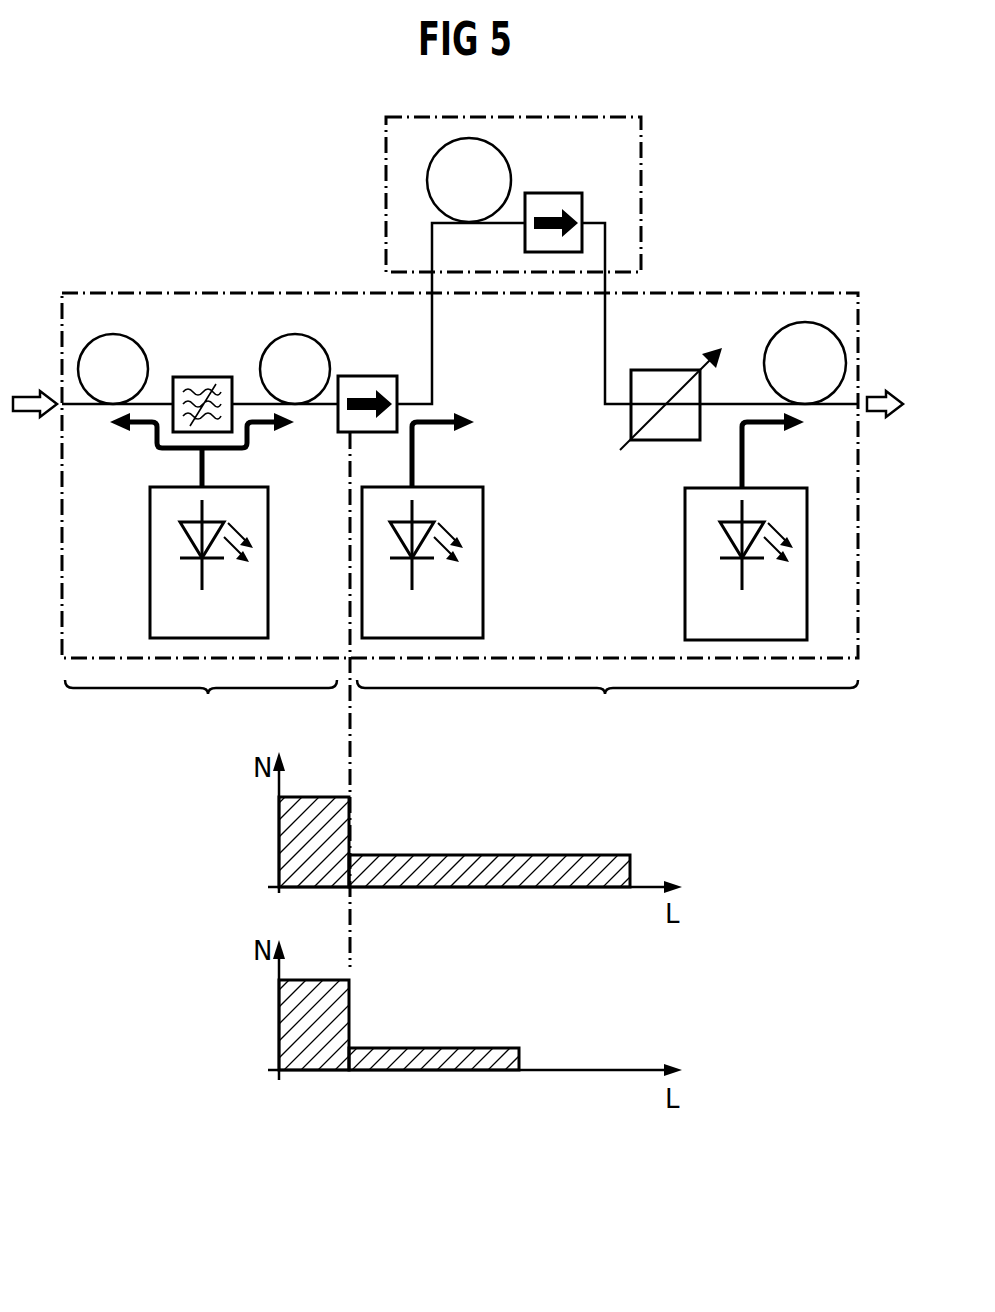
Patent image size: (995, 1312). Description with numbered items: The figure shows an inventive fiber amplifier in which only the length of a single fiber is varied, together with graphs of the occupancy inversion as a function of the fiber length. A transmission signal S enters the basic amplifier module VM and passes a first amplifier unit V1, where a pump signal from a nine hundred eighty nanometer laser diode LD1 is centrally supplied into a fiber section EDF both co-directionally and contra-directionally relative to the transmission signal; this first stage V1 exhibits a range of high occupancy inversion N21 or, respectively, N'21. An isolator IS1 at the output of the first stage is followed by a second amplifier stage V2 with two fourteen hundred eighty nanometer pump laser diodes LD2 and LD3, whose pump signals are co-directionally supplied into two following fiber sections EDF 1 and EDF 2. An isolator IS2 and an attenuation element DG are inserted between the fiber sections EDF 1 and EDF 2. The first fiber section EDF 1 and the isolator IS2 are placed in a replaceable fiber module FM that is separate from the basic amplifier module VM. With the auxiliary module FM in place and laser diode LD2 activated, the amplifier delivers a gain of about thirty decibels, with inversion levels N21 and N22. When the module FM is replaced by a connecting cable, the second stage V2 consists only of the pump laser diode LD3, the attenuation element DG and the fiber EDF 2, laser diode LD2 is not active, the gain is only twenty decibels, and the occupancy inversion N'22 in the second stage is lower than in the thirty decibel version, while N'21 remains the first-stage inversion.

The fiber module FM is at (386, 193).
The basic amplifier module VM is at (150, 293).
The input signal S is at (35, 390).
The fiber section EDF is at (204, 369).
The first fiber section EDF 1 is at (469, 180).
The second fiber section EDF 2 is at (805, 363).
The isolator IS1 is at (367, 377).
The isolator IS2 is at (555, 193).
The attenuation element DG is at (665, 370).
The 980 nm laser diode LD1 is at (150, 560).
The 1480 nm pump laser diode LD2 is at (483, 558).
The 1480 nm pump laser diode LD3 is at (685, 562).
The first amplifier unit V1 is at (201, 709).
The second amplifier stage V2 is at (607, 709).
The occupancy inversion N21 is at (318, 800).
The occupancy inversion N22 is at (562, 862).
The occupancy inversion N'21 is at (314, 992).
The occupancy inversion N'22 is at (434, 1021).